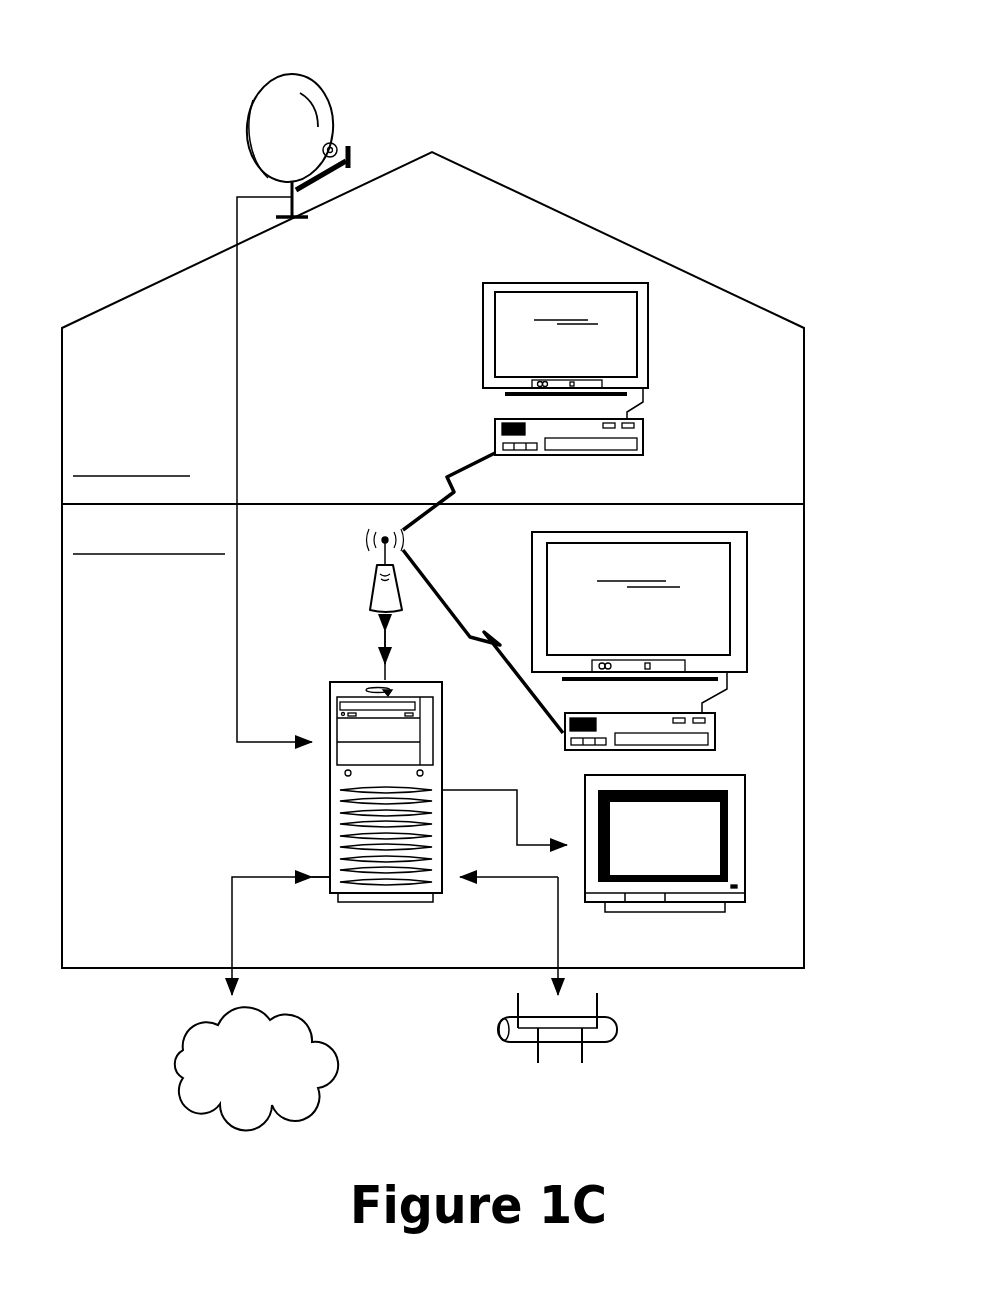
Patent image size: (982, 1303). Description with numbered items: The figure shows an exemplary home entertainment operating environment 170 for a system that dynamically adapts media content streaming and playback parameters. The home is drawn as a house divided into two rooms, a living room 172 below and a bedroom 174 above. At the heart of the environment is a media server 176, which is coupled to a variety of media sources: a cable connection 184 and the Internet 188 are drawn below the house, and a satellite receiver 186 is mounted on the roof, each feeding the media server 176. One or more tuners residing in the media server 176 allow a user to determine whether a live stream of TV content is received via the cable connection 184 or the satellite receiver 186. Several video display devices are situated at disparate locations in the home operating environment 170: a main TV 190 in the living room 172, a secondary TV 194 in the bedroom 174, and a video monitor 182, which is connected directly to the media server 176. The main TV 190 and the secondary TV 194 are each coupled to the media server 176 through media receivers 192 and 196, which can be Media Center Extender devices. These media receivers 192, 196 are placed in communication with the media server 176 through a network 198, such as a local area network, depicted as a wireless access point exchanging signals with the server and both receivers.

The home entertainment operating environment 170 is at (648, 148).
The living room 172 is at (728, 968).
The bedroom 174 is at (195, 262).
The media server 176 is at (350, 682).
The video monitor 182 is at (745, 843).
The cable connection 184 is at (617, 1028).
The satellite receiver 186 is at (277, 97).
The Internet 188 is at (177, 1065).
The main TV 190 is at (747, 605).
The media receiver 192 is at (715, 735).
The secondary TV 194 is at (553, 282).
The media receiver 196 is at (643, 444).
The network 198 is at (372, 592).